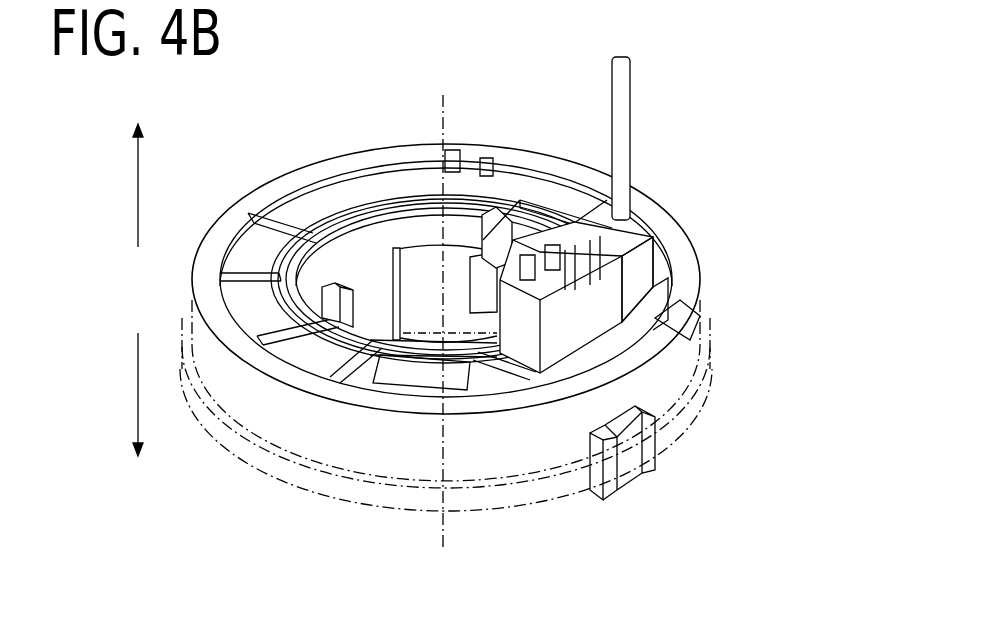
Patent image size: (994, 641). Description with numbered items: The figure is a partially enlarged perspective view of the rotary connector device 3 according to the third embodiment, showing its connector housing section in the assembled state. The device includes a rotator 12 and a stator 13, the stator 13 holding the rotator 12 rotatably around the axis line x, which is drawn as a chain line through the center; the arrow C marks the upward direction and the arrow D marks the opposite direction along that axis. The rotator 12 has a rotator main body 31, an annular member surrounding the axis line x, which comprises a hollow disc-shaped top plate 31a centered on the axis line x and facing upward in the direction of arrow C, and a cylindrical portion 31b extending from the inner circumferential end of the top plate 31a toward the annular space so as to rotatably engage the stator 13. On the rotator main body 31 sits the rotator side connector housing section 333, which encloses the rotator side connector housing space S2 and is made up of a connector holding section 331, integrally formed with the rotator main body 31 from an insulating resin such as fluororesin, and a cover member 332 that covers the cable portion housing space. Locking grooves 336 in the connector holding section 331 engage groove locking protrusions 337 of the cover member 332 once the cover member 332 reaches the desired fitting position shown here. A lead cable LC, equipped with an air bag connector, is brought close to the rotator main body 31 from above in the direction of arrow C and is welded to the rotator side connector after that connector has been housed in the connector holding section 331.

The rotary connector device 3 is at (760, 116).
The rotator 12 is at (713, 209).
The stator 13 is at (716, 310).
The rotator main body 31 is at (258, 184).
The top plate 31a is at (300, 203).
The cylindrical portion 31b is at (360, 243).
The connector holding section 331 is at (543, 240).
The cover member 332 is at (658, 269).
The rotator side connector housing section 333 is at (642, 215).
The locking grooves 336 is at (702, 318).
The groove locking protrusions 337 is at (700, 307).
The rotator side connector housing space S2 is at (512, 207).
The lead cable LC is at (632, 102).
The axis line x is at (442, 112).
The arrow C direction C is at (137, 191).
The arrow D direction D is at (137, 390).